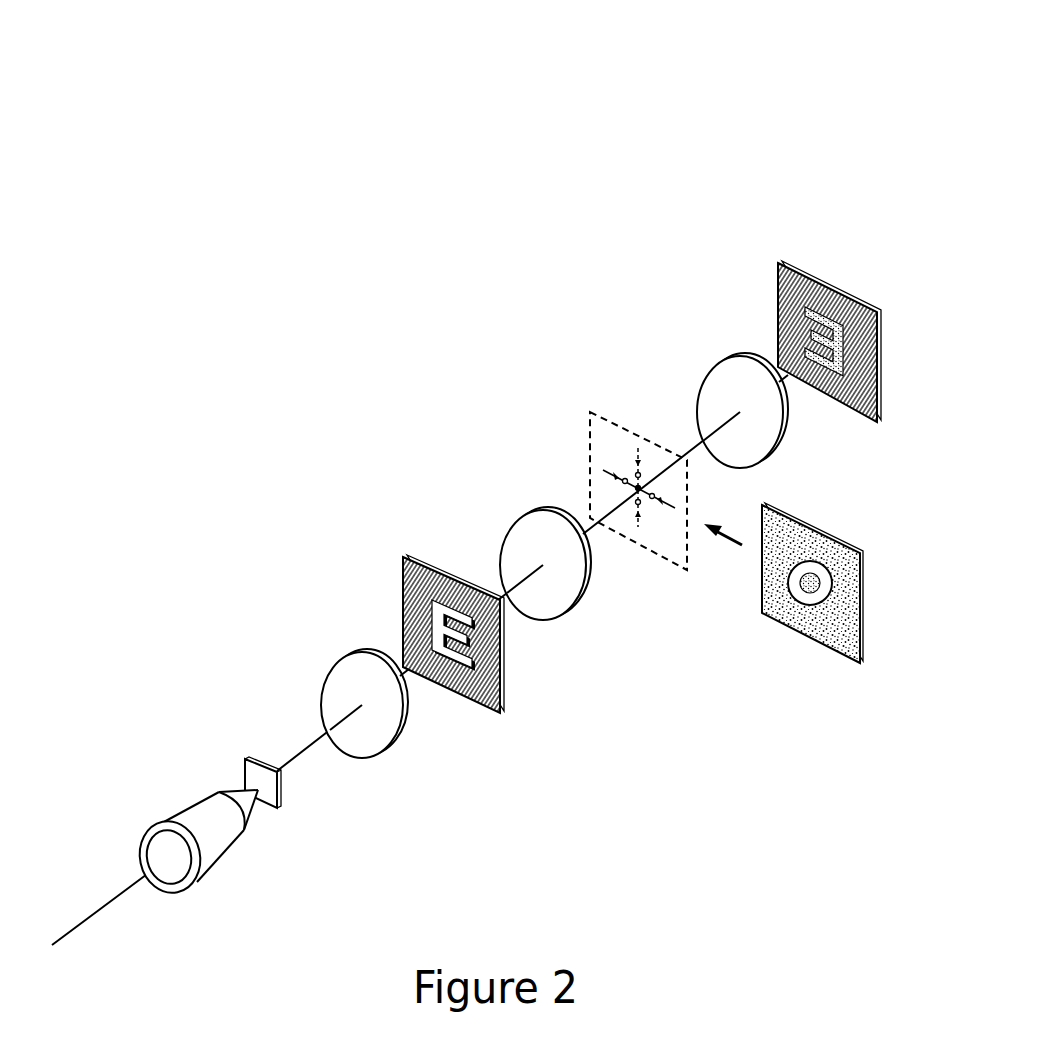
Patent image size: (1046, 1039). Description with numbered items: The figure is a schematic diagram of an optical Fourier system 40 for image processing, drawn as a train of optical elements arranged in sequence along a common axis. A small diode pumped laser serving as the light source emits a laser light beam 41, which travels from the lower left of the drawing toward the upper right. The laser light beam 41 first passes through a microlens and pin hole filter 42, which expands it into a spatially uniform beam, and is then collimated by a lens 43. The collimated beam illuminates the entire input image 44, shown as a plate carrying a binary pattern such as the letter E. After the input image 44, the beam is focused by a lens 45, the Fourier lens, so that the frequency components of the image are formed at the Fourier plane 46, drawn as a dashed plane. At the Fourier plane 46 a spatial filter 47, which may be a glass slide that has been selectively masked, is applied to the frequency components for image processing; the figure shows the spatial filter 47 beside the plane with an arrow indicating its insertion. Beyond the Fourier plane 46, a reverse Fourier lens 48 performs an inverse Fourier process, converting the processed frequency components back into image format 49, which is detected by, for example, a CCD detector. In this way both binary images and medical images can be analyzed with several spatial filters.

The optical imaging system 40 is at (467, 131).
The laser light beam 41 is at (75, 932).
The microlens and pin hole filter 42 is at (210, 876).
The lens 43 is at (385, 755).
The input image 44 is at (402, 557).
The lens (Fourier lens) 45 is at (515, 523).
The Fourier plane 46 is at (590, 410).
The spatial filter 47 is at (800, 633).
The reverse Fourier lens 48 is at (710, 367).
The image format 49 is at (778, 263).